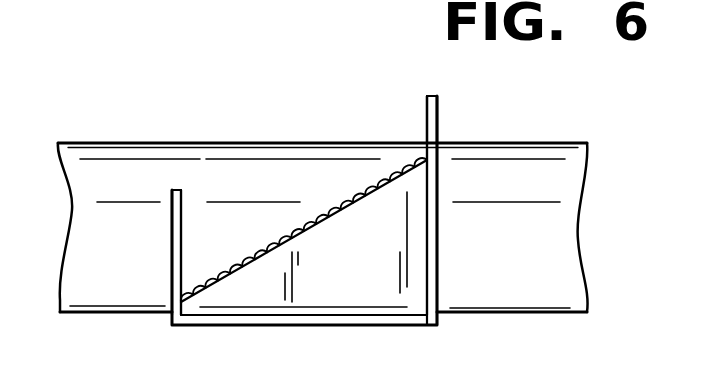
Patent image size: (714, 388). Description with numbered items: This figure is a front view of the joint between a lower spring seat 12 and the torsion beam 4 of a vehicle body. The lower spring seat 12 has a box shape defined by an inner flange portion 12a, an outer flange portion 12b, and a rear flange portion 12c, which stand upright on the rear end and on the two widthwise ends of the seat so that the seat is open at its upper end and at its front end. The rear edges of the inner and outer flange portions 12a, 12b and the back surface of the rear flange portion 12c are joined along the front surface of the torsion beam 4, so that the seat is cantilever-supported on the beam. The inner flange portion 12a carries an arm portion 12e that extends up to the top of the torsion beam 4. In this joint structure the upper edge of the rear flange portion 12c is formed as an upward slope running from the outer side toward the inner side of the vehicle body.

The torsion beam 4 is at (173, 143).
The lower spring seat 12 is at (310, 233).
The inner flange portion 12a is at (437, 245).
The outer flange portion 12b is at (172, 262).
The rear flange portion 12c is at (273, 250).
The arm portion 12e is at (437, 113).